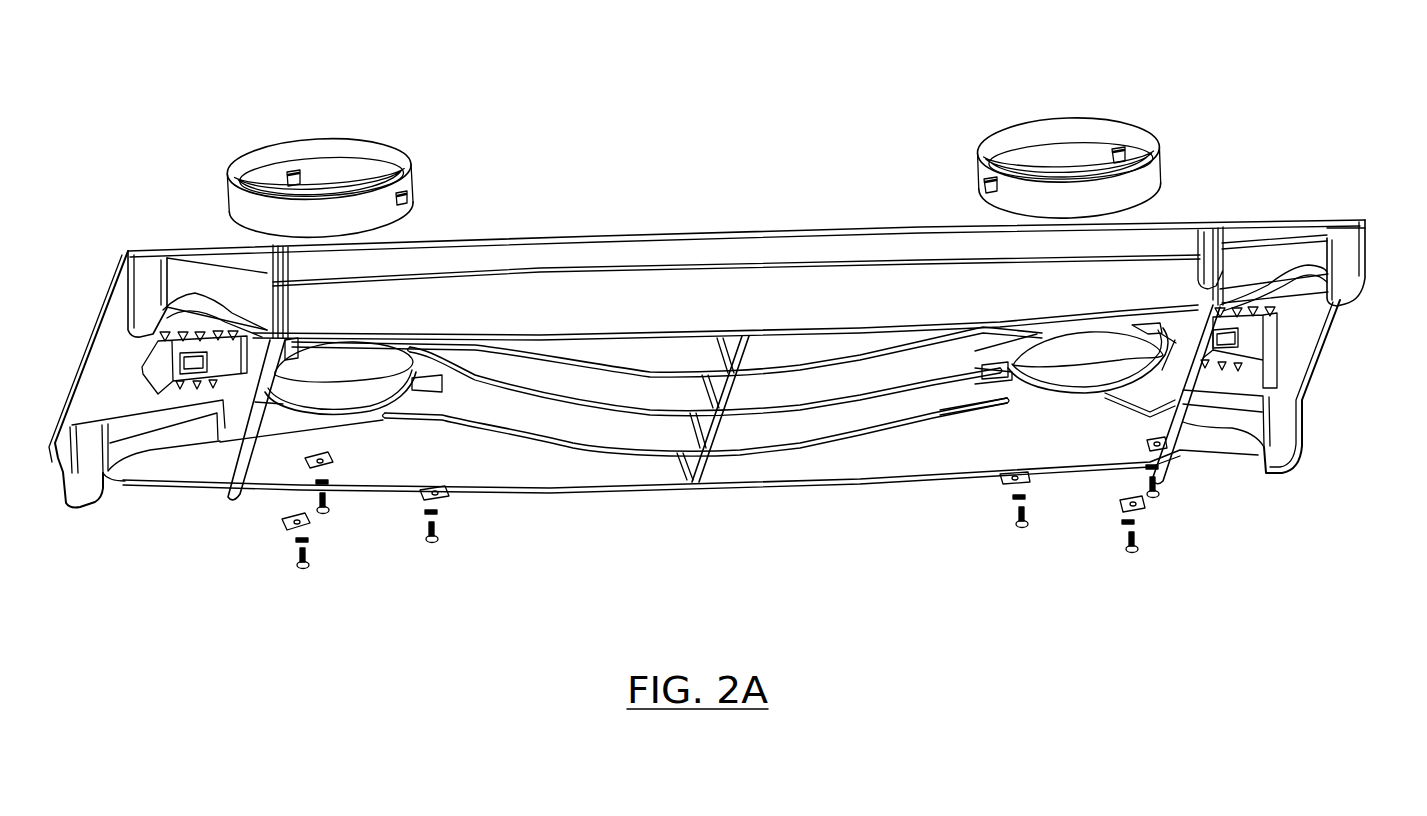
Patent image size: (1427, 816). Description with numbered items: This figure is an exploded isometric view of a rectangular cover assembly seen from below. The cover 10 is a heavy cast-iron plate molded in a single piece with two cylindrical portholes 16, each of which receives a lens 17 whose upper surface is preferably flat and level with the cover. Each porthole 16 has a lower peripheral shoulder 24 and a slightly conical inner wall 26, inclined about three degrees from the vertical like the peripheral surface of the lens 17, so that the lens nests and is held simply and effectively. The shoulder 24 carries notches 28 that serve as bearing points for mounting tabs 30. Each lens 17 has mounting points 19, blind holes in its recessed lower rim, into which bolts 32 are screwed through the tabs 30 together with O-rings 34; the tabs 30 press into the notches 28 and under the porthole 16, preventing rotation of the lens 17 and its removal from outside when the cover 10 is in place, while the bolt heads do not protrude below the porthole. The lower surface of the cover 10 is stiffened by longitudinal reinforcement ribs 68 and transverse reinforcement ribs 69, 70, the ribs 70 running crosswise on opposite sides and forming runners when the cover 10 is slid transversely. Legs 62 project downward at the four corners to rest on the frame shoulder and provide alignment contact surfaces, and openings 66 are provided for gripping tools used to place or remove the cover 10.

The cover 10 is at (693, 207).
The porthole 16 is at (347, 398).
The lens 17 is at (277, 136).
The mounting point 19 is at (1116, 154).
The lower peripheral shoulder 24 is at (960, 410).
The inner wall 26 is at (1038, 378).
The notch 28 is at (1163, 403).
The mounting tab 30 is at (1120, 505).
The bolt 32 is at (1138, 550).
The O-ring 34 is at (1137, 520).
The leg 62 is at (1365, 268).
The opening 66 is at (194, 367).
The longitudinal reinforcement rib 68 is at (632, 414).
The transverse reinforcement rib 69 is at (700, 463).
The transverse reinforcement rib 70 is at (225, 458).